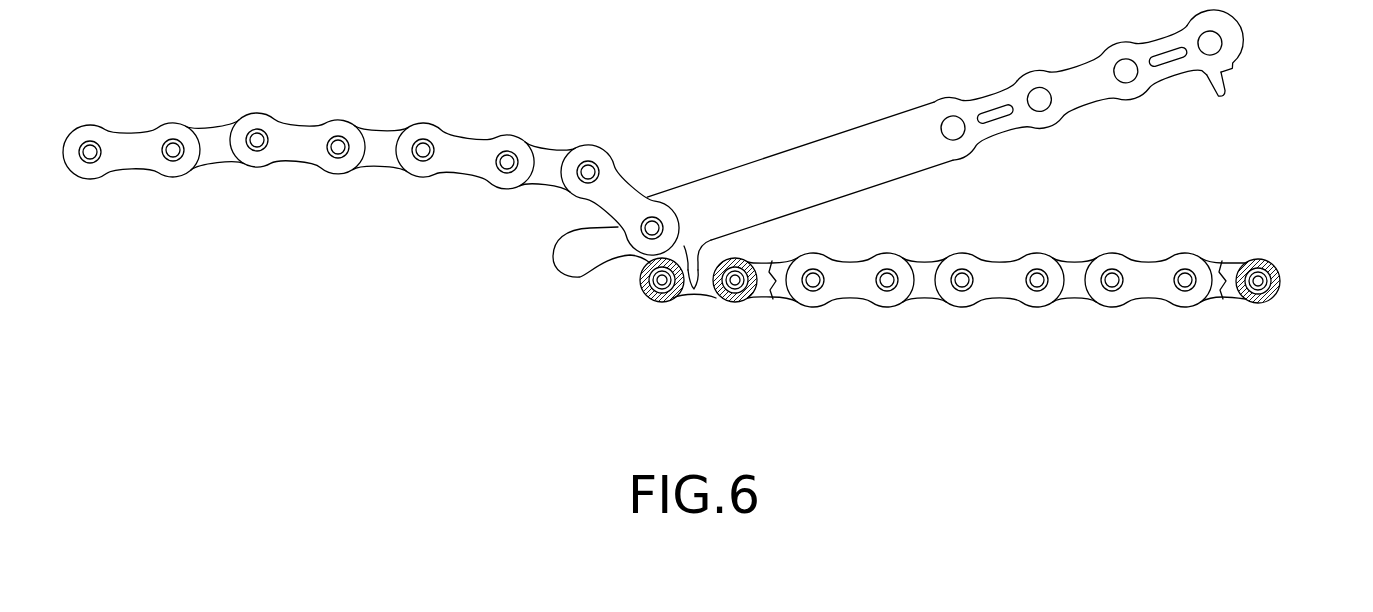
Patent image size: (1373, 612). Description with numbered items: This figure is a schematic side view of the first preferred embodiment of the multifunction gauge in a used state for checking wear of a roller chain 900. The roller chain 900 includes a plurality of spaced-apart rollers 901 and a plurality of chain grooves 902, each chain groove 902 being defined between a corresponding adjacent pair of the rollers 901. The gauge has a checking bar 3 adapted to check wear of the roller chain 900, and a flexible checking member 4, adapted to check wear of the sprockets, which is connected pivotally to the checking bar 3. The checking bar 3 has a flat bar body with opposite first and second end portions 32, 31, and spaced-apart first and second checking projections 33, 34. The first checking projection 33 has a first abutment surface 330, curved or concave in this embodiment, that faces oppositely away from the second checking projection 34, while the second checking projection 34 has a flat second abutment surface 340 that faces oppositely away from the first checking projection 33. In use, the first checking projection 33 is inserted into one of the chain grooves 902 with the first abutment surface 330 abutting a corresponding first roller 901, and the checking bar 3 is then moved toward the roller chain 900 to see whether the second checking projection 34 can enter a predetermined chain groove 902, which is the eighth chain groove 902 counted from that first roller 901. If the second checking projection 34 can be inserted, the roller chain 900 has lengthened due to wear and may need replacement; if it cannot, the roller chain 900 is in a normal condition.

The checking bar 3 is at (915, 162).
The flexible checking member 4 is at (338, 130).
The second end portion 31 is at (823, 165).
The first end portion 32 is at (570, 265).
The first checking projection 33 is at (690, 265).
The first abutment surface 330 is at (698, 277).
The second checking projection 34 is at (1217, 95).
The second abutment surface 340 is at (1229, 76).
The roller chain 900 is at (1068, 288).
The rollers 901 is at (668, 303).
The chain grooves 902 is at (700, 290).